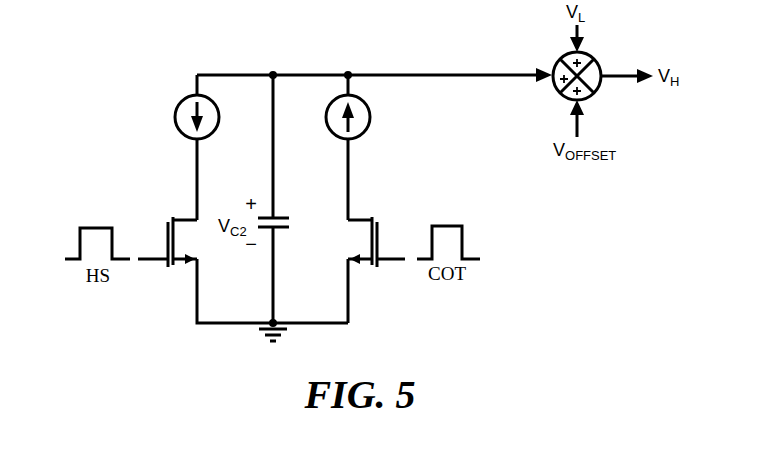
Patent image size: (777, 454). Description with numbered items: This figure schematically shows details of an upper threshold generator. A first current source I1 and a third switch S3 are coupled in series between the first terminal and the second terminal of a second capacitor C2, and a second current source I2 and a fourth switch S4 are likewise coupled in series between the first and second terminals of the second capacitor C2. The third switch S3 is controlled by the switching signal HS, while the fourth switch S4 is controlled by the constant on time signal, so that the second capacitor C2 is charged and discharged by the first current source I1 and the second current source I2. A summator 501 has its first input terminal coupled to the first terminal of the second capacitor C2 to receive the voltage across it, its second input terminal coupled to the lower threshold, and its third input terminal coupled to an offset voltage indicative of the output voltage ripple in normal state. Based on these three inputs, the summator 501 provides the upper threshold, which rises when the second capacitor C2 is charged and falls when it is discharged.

The summator 501 is at (550, 56).
The first current source I1 is at (183, 117).
The second current source I2 is at (363, 117).
The third switch S3 is at (167, 229).
The fourth switch S4 is at (376, 229).
The second capacitor C2 is at (288, 228).